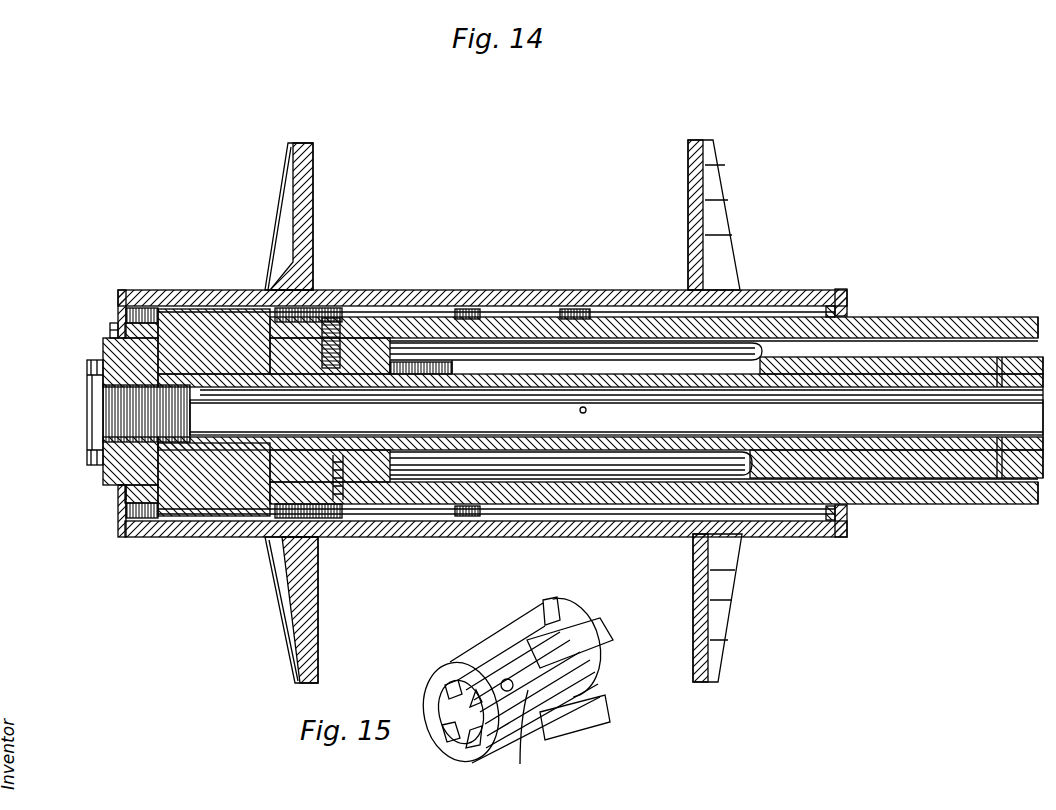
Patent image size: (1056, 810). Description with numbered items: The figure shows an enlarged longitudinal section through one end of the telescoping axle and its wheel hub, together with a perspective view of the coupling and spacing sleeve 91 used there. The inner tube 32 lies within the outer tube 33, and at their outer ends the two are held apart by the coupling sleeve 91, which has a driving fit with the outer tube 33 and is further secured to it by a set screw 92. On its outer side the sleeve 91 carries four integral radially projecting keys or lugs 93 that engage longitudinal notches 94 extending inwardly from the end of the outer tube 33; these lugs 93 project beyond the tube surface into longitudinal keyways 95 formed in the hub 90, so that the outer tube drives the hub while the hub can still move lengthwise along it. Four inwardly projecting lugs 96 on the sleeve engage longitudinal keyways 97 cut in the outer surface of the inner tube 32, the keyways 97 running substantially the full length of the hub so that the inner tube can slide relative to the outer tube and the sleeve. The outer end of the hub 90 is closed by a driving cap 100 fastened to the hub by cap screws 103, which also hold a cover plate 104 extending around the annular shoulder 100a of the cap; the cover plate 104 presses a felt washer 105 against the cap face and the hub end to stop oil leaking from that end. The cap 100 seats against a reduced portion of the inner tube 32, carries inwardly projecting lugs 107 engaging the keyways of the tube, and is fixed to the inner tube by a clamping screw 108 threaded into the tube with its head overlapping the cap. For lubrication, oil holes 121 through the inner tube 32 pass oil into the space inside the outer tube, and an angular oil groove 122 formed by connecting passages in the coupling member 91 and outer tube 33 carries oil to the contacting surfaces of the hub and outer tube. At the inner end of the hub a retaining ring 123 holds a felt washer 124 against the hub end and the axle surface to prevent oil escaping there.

In FIG. 14, the inner tube 32 is at (878, 378).
In FIG. 14, the outer tube 33 is at (556, 320).
In FIG. 14, the hub 90 is at (776, 298).
In FIG. 14, the coupling and spacing sleeve 91 is at (397, 330).
In FIG. 15, the coupling and spacing sleeve 91 is at (461, 712).
In FIG. 14, the set screw 92 is at (348, 312).
In FIG. 14, the radially projecting keys or lugs 93 is at (202, 312).
In FIG. 15, the radially projecting keys or lugs 93 is at (543, 608).
In FIG. 14, the longitudinal notches 94 is at (262, 330).
In FIG. 14, the longitudinal keyways 95 is at (498, 312).
In FIG. 14, the inwardly projecting lugs or keys 96 is at (417, 330).
In FIG. 15, the inwardly projecting lugs or keys 96 is at (437, 678).
In FIG. 14, the longitudinal keyways 97 is at (645, 350).
In FIG. 14, the driving cap 100 is at (110, 478).
In FIG. 14, the annular shoulder 100a is at (118, 497).
In FIG. 14, the cap screws 103 is at (112, 326).
In FIG. 14, the cover plate 104 is at (125, 528).
In FIG. 14, the washer 105 is at (135, 537).
In FIG. 14, the inwardly projecting lugs 107 is at (104, 350).
In FIG. 14, the clamping screw 108 is at (88, 412).
In FIG. 14, the oil holes 121 is at (452, 372).
In FIG. 14, the angular oil groove 122 is at (340, 500).
In FIG. 15, the angular oil groove 122 is at (521, 736).
In FIG. 14, the retaining ring 123 is at (848, 298).
In FIG. 14, the felt washer 124 is at (832, 312).